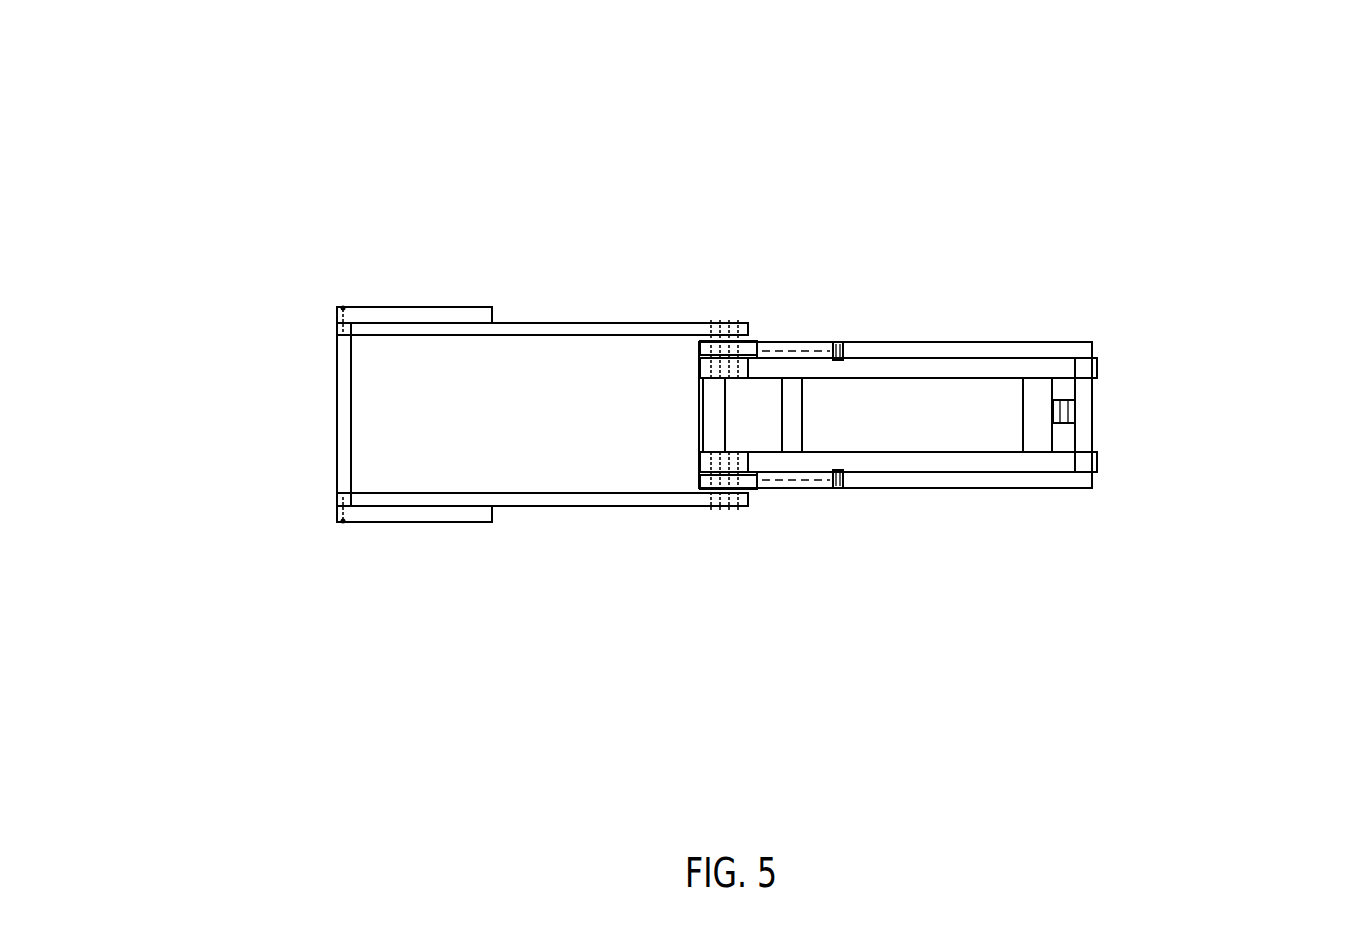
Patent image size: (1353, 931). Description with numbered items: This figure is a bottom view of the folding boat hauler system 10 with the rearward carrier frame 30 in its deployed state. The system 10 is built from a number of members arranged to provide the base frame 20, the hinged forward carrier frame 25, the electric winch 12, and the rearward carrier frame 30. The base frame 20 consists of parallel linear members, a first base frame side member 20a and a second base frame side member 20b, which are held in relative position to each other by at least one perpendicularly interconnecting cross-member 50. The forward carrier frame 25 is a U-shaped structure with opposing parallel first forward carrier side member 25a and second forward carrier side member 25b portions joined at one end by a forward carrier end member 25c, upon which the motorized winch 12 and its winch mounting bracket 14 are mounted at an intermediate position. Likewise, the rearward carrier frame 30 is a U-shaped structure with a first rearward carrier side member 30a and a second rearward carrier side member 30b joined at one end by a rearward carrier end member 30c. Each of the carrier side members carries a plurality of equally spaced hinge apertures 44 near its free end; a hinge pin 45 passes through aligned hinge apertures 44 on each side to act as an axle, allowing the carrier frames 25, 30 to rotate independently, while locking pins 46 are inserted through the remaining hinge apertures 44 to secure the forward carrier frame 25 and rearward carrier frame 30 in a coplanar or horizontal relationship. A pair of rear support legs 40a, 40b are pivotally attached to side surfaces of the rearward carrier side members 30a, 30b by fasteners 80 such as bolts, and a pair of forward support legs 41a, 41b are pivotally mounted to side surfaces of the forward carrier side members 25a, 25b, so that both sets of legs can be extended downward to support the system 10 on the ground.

The folding boat hauler system 10 is at (318, 227).
The motorized winch 12 is at (1145, 414).
The winch mounting bracket 14 is at (1082, 413).
The base frame 20 is at (1018, 463).
The first base frame side member 20a is at (1095, 365).
The second base frame side member 20b is at (1097, 465).
The forward carrier frame 25 is at (917, 340).
The first forward carrier side member 25a is at (942, 340).
The second forward carrier side member 25b is at (945, 488).
The forward carrier end member 25c is at (1090, 394).
The rearward carrier frame 30 is at (647, 325).
The first rearward carrier side member 30a is at (527, 323).
The second rearward carrier side member 30b is at (548, 495).
The rearward carrier end member 30c is at (343, 383).
The rear support leg 40a is at (425, 307).
The rear support leg 40b is at (422, 527).
The forward support leg 41a is at (813, 342).
The forward support leg 41b is at (820, 488).
The hinge aperture 44 is at (751, 411).
The hinge pin 45 is at (740, 322).
The locking pin 46 is at (738, 321).
The cross-member 50 is at (708, 405).
The fastener 80 is at (337, 312).